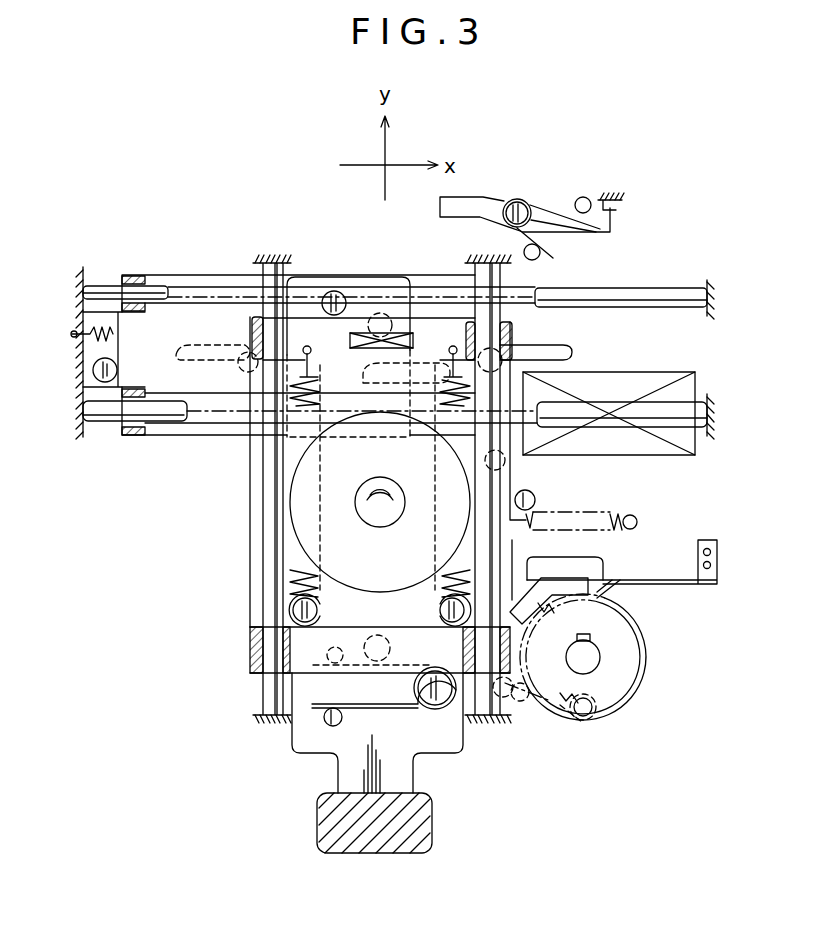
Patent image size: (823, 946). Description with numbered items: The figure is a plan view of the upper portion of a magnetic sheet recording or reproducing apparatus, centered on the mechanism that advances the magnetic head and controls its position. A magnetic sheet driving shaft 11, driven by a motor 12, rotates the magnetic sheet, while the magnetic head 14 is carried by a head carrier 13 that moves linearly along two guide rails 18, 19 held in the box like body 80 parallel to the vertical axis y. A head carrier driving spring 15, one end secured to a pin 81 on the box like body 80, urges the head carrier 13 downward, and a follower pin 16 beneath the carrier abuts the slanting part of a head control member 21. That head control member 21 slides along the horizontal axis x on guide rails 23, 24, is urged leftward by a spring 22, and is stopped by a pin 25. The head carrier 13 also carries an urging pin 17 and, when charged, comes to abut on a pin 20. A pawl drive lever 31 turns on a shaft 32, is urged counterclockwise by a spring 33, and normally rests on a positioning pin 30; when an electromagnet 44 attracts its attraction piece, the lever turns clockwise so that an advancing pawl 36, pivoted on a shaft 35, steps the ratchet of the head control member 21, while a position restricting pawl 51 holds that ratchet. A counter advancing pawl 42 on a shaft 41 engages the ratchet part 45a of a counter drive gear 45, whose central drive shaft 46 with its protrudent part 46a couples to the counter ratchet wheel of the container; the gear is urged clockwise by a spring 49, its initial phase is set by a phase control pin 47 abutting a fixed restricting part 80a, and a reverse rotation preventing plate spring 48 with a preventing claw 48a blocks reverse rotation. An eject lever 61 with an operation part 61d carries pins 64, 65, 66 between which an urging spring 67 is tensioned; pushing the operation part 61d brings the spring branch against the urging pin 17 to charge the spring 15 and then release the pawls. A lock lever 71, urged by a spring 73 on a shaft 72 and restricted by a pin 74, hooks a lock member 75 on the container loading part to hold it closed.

The magnetic sheet driving shaft 11 is at (358, 515).
The motor 12 is at (330, 495).
The head carrier 13 is at (300, 278).
The magnetic head 14 is at (368, 333).
The head carrier driving spring 15 is at (292, 583).
The follower pin 16 is at (384, 314).
The urging pin 17 is at (255, 650).
The guide rail 18 is at (262, 472).
The guide rail 19 is at (514, 488).
The pin 20 is at (335, 291).
The head control member 21 is at (205, 275).
The spring 22 is at (100, 328).
The guide rail 23 is at (172, 421).
The guide rail 24 is at (160, 286).
The pin 25 is at (93, 375).
The positioning pin 30 is at (536, 500).
The pawl drive lever 31 is at (516, 548).
The shaft 32 is at (505, 462).
The spring 33 is at (615, 512).
The shaft 35 is at (512, 345).
The advancing pawl 36 is at (568, 345).
The shaft 41 is at (528, 612).
The counter advancing pawl 42 is at (600, 568).
The electromagnet 44 is at (680, 455).
The counter drive gear 45 is at (640, 660).
The ratchet part 45a is at (552, 610).
The drive shaft 46 is at (597, 668).
The protrudent part 46a is at (590, 638).
The phase control pin 47 is at (590, 715).
The reverse rotation preventing plate spring 48 is at (704, 585).
The preventing claw 48a is at (622, 590).
The spring 49 is at (532, 702).
The position restricting pawl 51 is at (232, 367).
The eject lever 61 is at (412, 768).
The operation part 61d is at (428, 828).
The pin 64 is at (445, 705).
The pin 65 is at (312, 710).
The pin 66 is at (325, 658).
The urging spring 67 is at (330, 726).
The lock lever 71 is at (462, 197).
The shaft 72 is at (522, 200).
The spring 73 is at (550, 210).
The pin 74 is at (588, 198).
The lock member 75 is at (618, 205).
The box like body 80 is at (84, 268).
The fixed restricting part 80a is at (572, 718).
The pin 81 is at (293, 612).